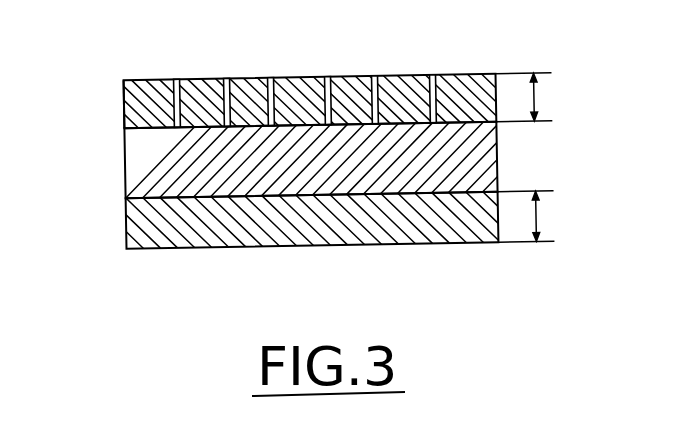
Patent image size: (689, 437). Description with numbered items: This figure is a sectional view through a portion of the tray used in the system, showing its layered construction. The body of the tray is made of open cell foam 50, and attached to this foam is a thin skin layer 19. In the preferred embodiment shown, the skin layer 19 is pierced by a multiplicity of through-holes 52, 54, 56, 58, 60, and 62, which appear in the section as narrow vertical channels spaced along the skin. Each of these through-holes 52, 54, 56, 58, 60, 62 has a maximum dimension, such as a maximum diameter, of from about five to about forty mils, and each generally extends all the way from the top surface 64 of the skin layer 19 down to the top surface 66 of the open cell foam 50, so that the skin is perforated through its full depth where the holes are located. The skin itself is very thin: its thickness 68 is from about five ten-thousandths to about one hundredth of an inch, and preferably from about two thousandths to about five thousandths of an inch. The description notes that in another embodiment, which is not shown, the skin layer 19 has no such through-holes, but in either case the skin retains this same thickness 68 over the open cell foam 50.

The skin layer 19 is at (347, 130).
The open cell foam 50 is at (372, 159).
The through-hole 52 is at (177, 103).
The through-hole 54 is at (227, 102).
The through-hole 56 is at (271, 102).
The through-hole 58 is at (328, 101).
The through-hole 60 is at (375, 100).
The through-hole 62 is at (433, 99).
The top surface of the skin layer 64 is at (303, 101).
The top surface of the open cell foam layer 66 is at (124, 104).
The thickness of the skin layer 68 is at (313, 161).